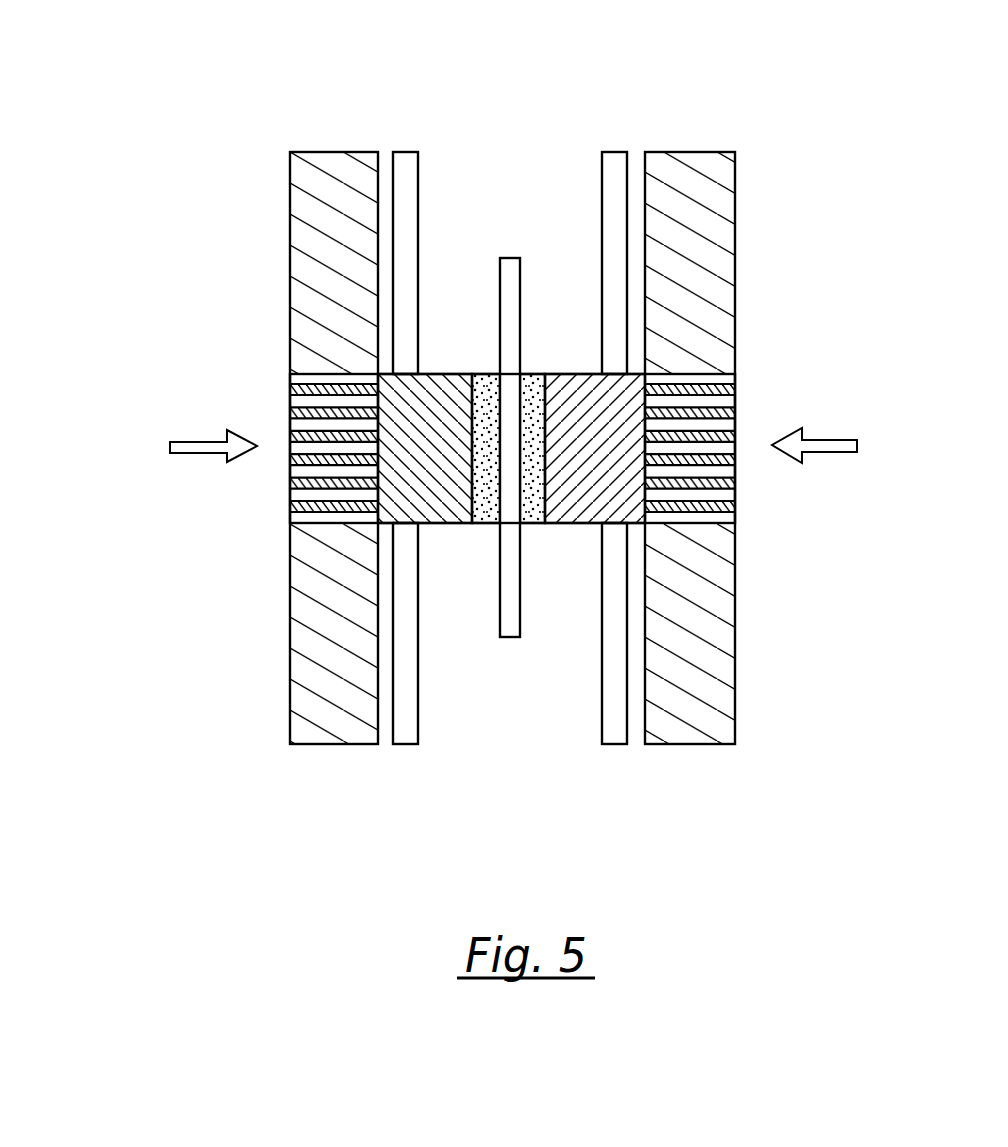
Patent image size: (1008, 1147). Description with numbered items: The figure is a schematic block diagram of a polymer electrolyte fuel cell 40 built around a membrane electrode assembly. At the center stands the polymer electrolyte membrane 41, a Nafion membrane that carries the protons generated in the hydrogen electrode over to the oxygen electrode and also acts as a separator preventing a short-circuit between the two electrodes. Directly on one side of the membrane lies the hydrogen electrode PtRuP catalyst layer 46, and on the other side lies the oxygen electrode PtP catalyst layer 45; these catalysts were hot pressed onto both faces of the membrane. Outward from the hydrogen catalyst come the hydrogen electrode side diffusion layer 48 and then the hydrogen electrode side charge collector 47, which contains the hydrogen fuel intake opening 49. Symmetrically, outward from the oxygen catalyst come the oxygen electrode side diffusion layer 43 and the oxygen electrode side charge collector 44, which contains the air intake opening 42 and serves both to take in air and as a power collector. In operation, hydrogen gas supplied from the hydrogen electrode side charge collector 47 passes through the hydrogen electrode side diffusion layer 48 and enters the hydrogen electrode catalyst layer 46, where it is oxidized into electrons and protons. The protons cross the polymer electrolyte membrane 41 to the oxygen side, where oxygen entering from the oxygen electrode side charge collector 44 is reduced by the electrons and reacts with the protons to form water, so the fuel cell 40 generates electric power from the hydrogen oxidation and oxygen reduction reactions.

The polymer electrolyte fuel cell 40 is at (226, 170).
The polymer electrolyte membrane 41 is at (512, 257).
The air intake opening 42 is at (735, 377).
The oxygen electrode side diffusion layer 43 is at (572, 524).
The oxygen electrode side charge collector 44 is at (693, 745).
The oxygen electrode PtP catalyst layer 45 is at (533, 373).
The hydrogen electrode PtRuP catalyst layer 46 is at (483, 373).
The hydrogen electrode side charge collector 47 is at (323, 745).
The hydrogen electrode side diffusion layer 48 is at (442, 524).
The hydrogen fuel intake opening 49 is at (289, 522).